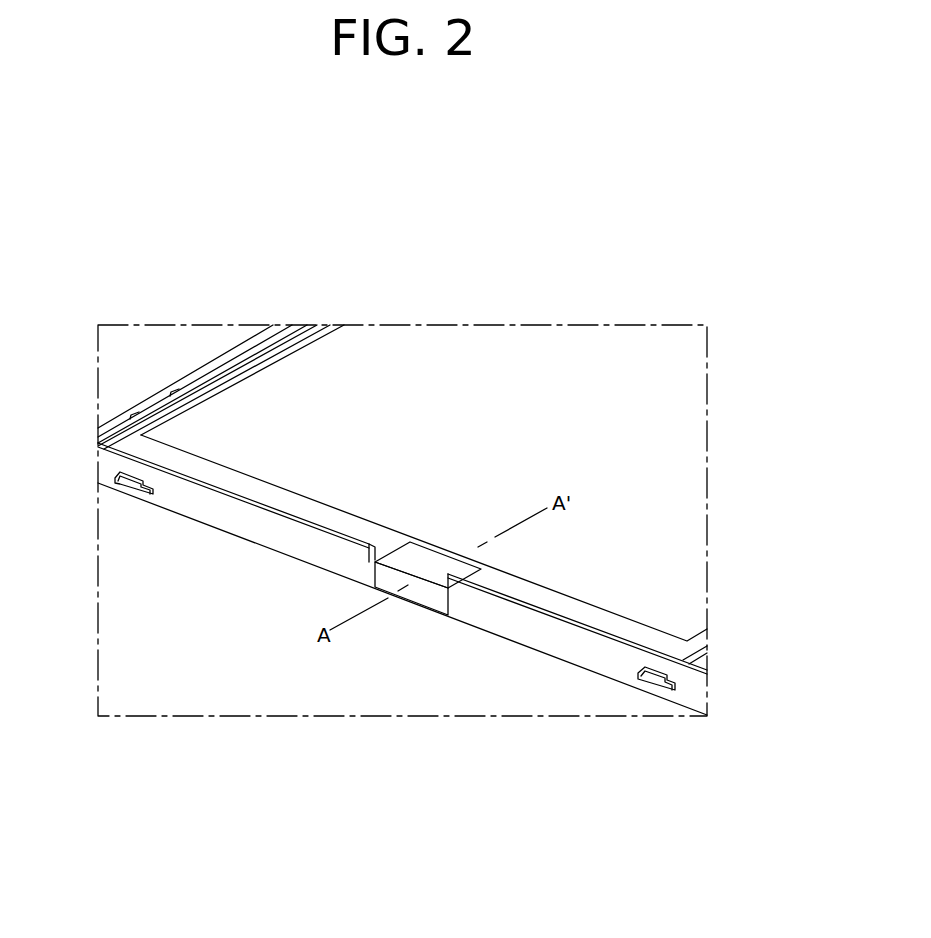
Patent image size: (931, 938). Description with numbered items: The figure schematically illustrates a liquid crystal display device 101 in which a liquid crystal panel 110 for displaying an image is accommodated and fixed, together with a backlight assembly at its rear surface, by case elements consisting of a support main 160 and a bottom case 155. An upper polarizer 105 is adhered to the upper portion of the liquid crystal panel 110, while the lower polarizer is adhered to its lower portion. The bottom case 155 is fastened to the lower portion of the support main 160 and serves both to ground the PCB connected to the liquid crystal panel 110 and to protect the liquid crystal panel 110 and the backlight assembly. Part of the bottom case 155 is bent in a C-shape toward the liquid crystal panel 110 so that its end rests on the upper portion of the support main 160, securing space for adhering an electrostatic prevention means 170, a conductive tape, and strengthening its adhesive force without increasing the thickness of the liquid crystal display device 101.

The liquid crystal display device 101 is at (726, 349).
The upper polarizer 105 is at (647, 597).
The liquid crystal panel 110 is at (590, 615).
The bottom case 155 is at (506, 622).
The support main 160 is at (124, 422).
The electrostatic prevention means 170 is at (412, 592).